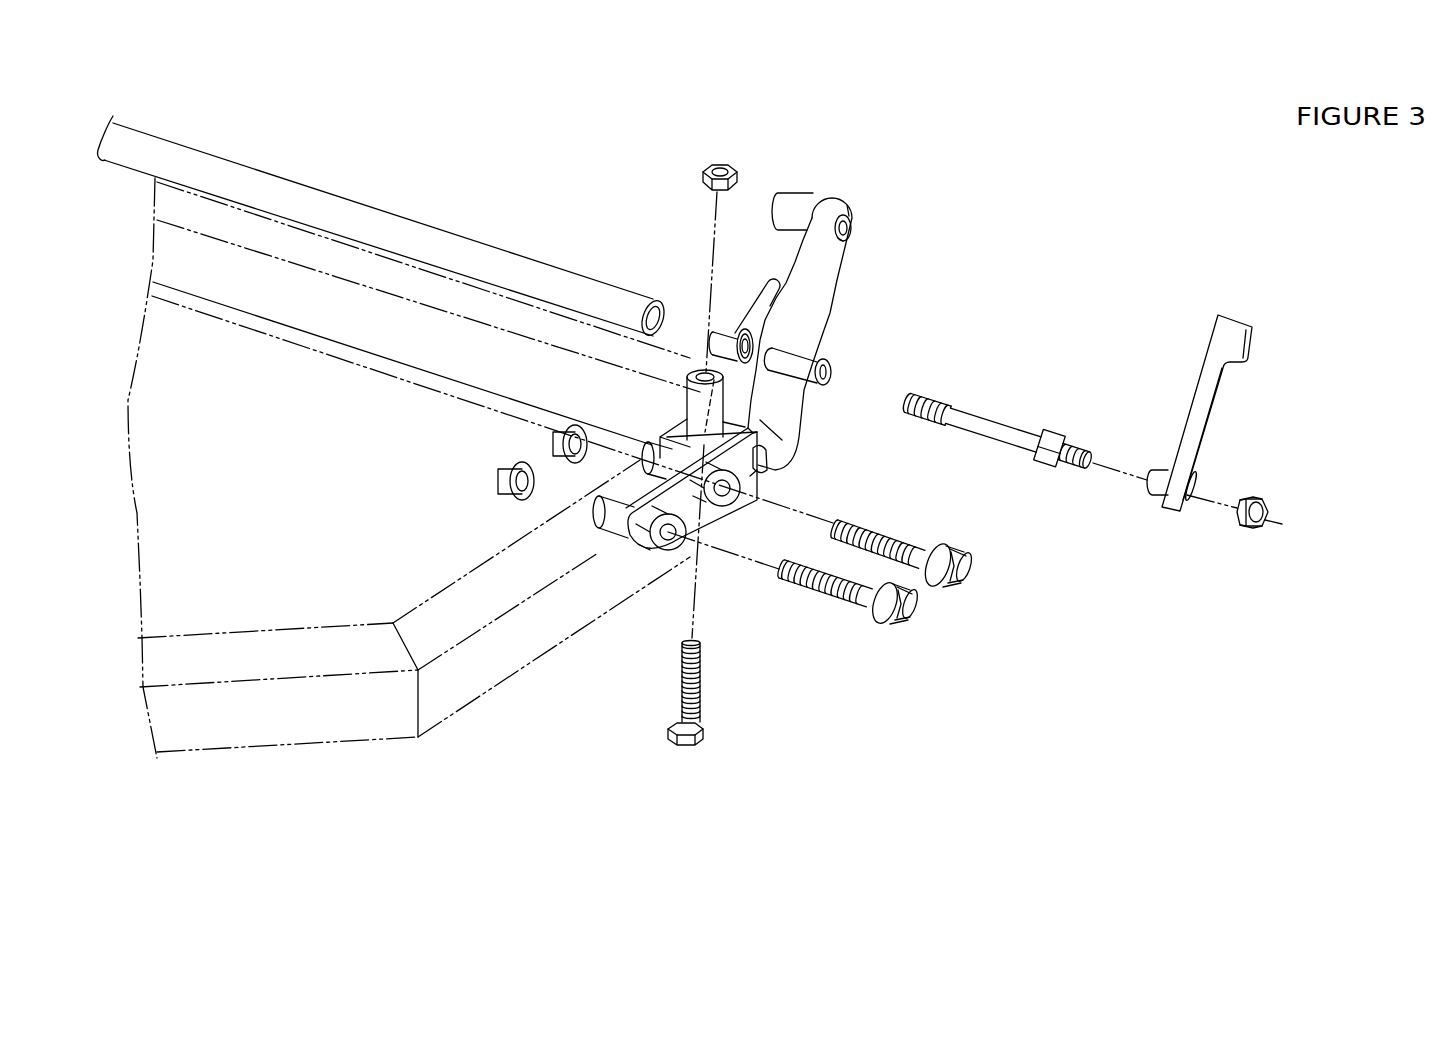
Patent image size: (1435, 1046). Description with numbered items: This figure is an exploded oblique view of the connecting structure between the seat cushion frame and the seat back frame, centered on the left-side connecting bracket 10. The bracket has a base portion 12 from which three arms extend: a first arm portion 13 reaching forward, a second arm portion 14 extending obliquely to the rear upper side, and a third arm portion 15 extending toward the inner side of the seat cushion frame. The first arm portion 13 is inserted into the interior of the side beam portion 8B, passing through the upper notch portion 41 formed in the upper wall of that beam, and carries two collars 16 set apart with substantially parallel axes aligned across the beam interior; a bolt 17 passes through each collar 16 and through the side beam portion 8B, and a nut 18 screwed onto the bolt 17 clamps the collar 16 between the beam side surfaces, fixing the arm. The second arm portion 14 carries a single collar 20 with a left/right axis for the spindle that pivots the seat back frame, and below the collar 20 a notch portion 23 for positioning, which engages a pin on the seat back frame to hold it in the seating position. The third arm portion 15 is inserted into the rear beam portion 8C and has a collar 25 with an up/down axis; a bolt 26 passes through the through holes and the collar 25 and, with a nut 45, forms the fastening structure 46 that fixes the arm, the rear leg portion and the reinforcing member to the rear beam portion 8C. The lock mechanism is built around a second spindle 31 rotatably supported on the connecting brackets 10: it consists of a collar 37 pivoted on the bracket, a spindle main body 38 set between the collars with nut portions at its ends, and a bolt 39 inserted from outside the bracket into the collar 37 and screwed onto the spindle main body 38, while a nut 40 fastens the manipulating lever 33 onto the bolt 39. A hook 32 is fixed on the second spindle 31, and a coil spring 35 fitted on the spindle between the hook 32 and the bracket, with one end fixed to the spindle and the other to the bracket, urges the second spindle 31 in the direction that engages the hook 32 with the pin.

The side beam portion 8B is at (523, 663).
The rear beam portion 8C is at (367, 287).
The connecting bracket 10 is at (835, 196).
The base portion 12 is at (782, 438).
The first arm portion 13 is at (632, 555).
The second arm portion 14 is at (850, 202).
The third arm portion 15 is at (660, 437).
The collar 16 is at (617, 468).
The bolt 17 is at (972, 575).
The nut 18 is at (552, 446).
The collar 20 is at (790, 192).
The notch portion for positioning 23 is at (832, 344).
The collar 25 is at (688, 374).
The bolt 26 is at (680, 750).
The second spindle 31 is at (445, 228).
The hook 32 is at (773, 285).
The manipulating lever 33 is at (1253, 332).
The coil spring 35 is at (742, 331).
The collar 37 is at (838, 374).
The spindle main body 38 is at (543, 258).
The bolt 39 is at (992, 417).
The nut 40 is at (1268, 506).
The upper notch portion 41 is at (798, 484).
The nut 45 is at (707, 162).
The fastening structure 46 is at (716, 731).